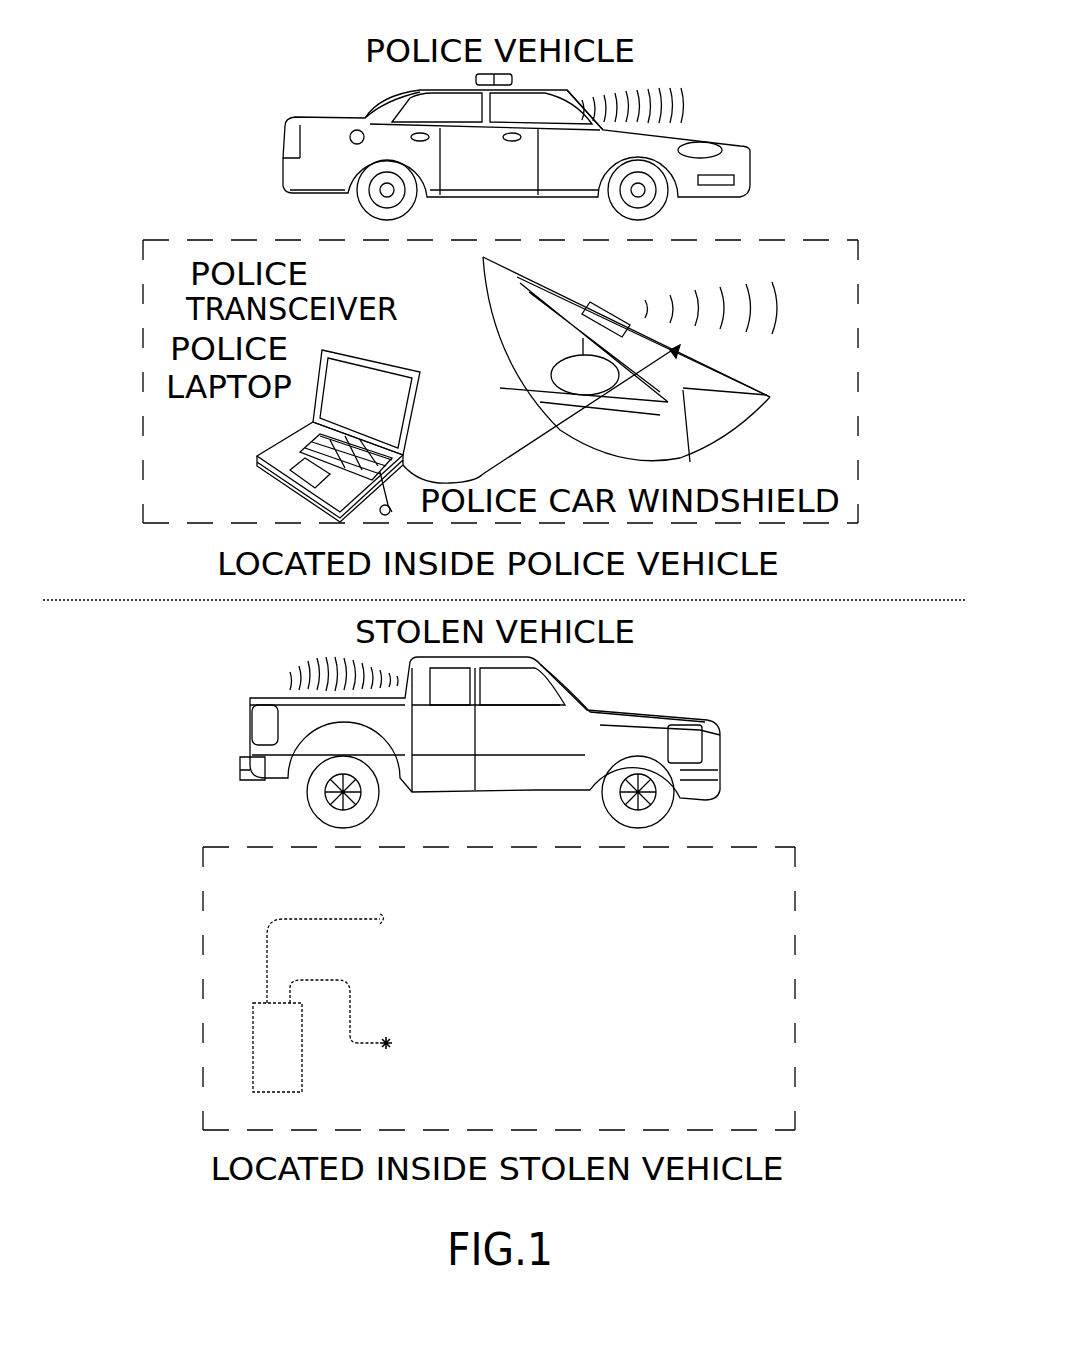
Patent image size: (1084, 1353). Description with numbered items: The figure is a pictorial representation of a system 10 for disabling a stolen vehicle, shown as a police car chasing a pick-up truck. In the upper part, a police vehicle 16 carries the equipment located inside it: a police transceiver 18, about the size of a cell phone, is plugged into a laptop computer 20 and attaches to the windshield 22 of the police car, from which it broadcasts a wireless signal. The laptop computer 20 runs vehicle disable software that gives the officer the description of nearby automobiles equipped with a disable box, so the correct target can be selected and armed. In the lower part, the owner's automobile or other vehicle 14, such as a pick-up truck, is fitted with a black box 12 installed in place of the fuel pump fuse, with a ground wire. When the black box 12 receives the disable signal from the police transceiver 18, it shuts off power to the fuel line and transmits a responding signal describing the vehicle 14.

The system 10 is at (795, 108).
The black box 12 is at (727, 848).
The vehicle 14 is at (568, 737).
The police vehicle 16 is at (370, 120).
The police transceiver 18 is at (572, 105).
The laptop computer 20 is at (283, 444).
The windshield 22 is at (680, 345).